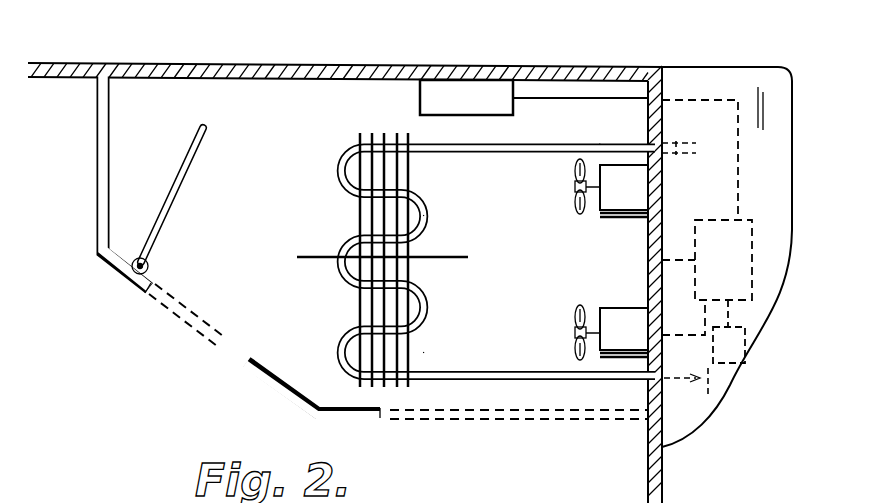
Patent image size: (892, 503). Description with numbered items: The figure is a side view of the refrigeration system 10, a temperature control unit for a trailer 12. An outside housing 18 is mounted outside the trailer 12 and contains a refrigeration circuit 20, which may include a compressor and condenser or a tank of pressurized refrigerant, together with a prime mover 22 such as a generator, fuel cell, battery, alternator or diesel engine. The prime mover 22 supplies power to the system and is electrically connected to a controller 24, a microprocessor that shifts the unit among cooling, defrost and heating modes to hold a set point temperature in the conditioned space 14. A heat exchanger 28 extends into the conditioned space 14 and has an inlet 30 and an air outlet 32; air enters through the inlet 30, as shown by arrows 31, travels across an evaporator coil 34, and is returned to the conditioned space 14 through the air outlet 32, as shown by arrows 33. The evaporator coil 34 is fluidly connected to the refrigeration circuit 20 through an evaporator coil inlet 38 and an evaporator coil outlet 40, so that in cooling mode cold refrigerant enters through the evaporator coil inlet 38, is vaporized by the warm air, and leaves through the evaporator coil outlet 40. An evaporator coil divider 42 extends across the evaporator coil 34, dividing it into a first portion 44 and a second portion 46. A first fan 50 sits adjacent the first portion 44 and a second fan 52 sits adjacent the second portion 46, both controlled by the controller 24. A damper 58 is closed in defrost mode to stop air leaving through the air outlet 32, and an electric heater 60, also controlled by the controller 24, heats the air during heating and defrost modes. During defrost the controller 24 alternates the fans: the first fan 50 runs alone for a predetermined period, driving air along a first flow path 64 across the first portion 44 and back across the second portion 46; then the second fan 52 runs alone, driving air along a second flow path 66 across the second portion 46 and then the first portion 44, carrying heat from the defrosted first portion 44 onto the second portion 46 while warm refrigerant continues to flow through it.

The refrigeration system 10 is at (688, 40).
The trailer 12 is at (279, 64).
The conditioned space 14 is at (110, 322).
The outside housing 18 is at (791, 125).
The refrigeration circuit 20 is at (675, 146).
The prime mover 22 is at (745, 345).
The controller 24 is at (740, 270).
The heat exchanger 28 is at (94, 121).
The inlet 30 is at (578, 410).
The arrows 31 is at (547, 387).
The air outlet 32 is at (240, 345).
The arrows 33 is at (238, 318).
The evaporator coil 34 is at (427, 232).
The evaporator coil inlet 38 is at (645, 382).
The evaporator coil outlet 40 is at (648, 140).
The evaporator coil divider 42 is at (314, 254).
The first portion 44 is at (424, 338).
The second portion 46 is at (430, 205).
The first fan 50 is at (628, 308).
The second fan 52 is at (634, 184).
The damper 58 is at (194, 140).
The electric heater 60 is at (488, 108).
The first flow path 64 is at (313, 167).
The second flow path 66 is at (270, 217).